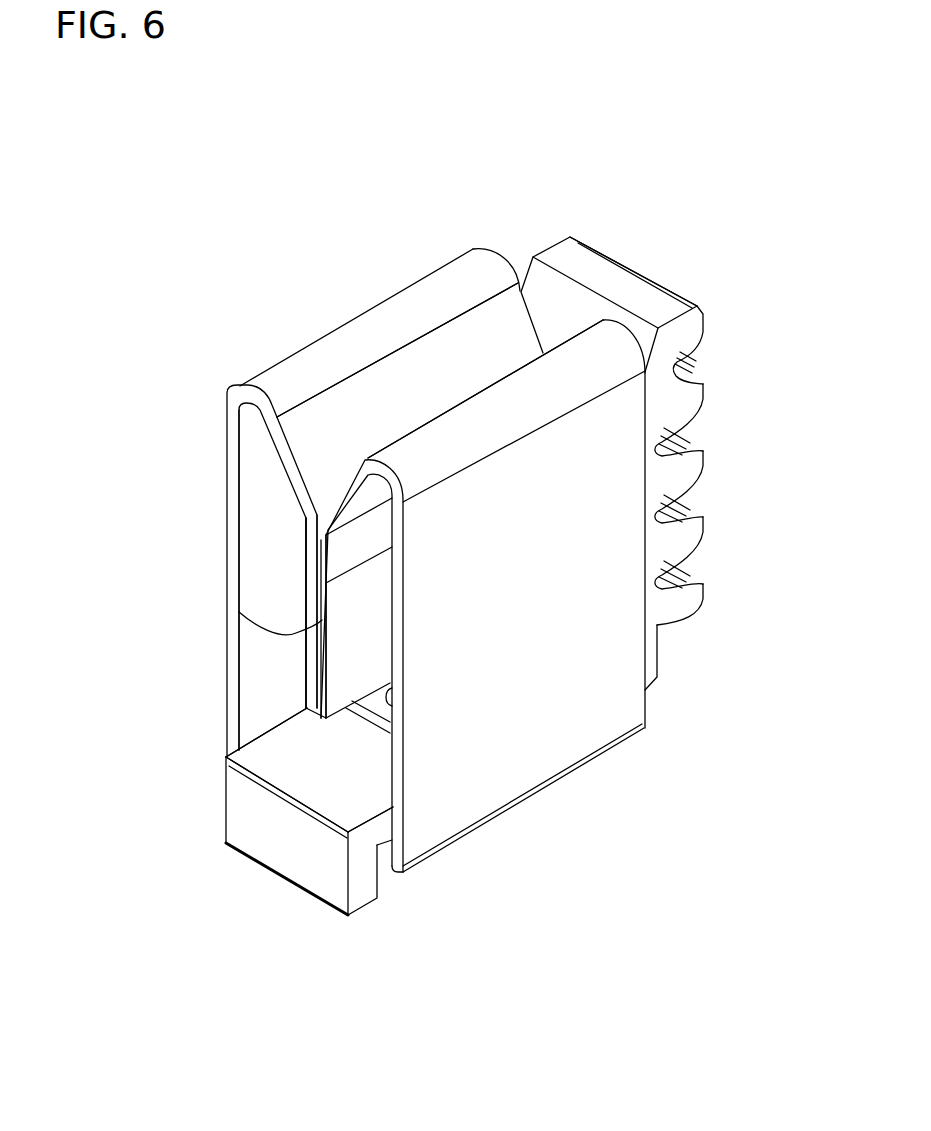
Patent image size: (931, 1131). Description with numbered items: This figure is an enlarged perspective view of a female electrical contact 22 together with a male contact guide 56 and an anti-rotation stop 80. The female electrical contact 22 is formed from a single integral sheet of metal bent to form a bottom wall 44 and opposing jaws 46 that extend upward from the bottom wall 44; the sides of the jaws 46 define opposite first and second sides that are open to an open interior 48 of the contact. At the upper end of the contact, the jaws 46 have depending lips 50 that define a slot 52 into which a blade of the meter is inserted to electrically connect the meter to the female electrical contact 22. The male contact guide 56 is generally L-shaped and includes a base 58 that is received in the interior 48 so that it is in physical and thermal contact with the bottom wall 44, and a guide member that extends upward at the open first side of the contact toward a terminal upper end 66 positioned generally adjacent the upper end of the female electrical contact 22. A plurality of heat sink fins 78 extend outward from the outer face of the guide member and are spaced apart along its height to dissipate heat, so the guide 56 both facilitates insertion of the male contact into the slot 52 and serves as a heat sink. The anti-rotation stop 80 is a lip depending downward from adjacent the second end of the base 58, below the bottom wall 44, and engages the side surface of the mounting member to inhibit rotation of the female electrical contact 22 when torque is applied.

The female electrical contact 22 is at (338, 304).
The bottom wall 44 is at (385, 867).
The jaws 46 is at (233, 513).
The open interior 48 is at (286, 669).
The depending lips 50 is at (312, 588).
The slot 52 is at (358, 434).
The male contact guide 56 is at (660, 248).
The base 58 is at (302, 768).
The terminal end 66 is at (583, 268).
The heat sink fins 78 is at (703, 320).
The anti-rotation stop 80 is at (257, 818).